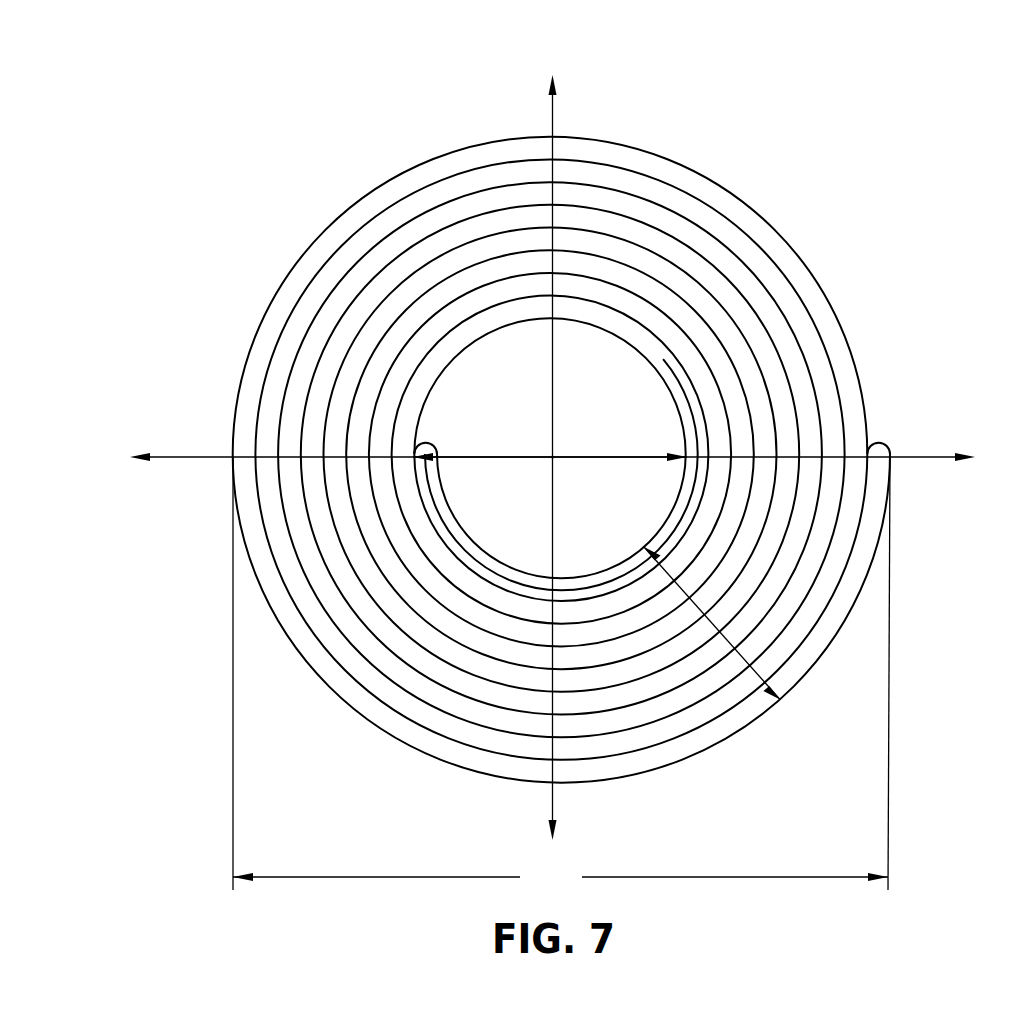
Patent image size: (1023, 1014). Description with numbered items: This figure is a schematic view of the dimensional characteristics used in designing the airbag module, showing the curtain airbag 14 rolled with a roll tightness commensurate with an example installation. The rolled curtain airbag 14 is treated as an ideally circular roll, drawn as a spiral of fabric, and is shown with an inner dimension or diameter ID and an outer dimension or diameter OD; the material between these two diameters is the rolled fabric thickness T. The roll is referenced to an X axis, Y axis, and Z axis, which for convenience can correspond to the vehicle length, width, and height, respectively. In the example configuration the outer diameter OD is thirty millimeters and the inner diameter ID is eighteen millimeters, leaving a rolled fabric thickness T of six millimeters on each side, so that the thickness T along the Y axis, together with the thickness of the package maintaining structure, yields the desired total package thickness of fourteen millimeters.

The curtain airbag 14 is at (786, 297).
The inner diameter ID is at (506, 458).
The outer diameter OD is at (561, 676).
The rolled fabric thickness T is at (736, 652).
The X axis X is at (553, 458).
The Y axis Y is at (566, 458).
The Z axis Z is at (551, 436).